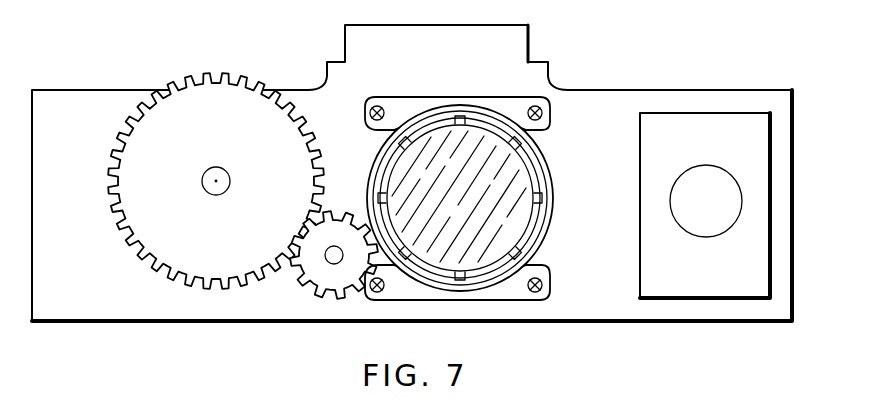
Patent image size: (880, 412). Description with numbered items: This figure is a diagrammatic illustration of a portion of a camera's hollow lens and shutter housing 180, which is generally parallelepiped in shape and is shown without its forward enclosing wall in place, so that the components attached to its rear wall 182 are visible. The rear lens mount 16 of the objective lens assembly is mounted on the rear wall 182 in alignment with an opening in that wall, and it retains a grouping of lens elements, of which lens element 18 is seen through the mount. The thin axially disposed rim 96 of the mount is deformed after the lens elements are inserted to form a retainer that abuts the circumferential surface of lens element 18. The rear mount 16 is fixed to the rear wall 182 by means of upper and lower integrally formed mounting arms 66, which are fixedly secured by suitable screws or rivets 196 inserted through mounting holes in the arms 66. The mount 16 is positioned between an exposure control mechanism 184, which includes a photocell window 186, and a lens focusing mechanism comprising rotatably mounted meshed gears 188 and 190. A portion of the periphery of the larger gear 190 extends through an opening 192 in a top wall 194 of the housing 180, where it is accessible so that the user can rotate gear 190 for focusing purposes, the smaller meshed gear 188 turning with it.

The rear lens mount 16 is at (478, 207).
The lens element 18 is at (405, 198).
The mounting arms 66 is at (474, 207).
The rim 96 is at (540, 222).
The lens and shutter housing 180 is at (412, 173).
The rear wall 182 is at (648, 90).
The exposure control mechanism 184 is at (705, 234).
The photocell window 186 is at (706, 216).
The gear 188 is at (324, 272).
The gear 190 is at (220, 250).
The opening 192 is at (216, 183).
The top wall 194 is at (94, 90).
The screws or rivets 196 is at (542, 280).